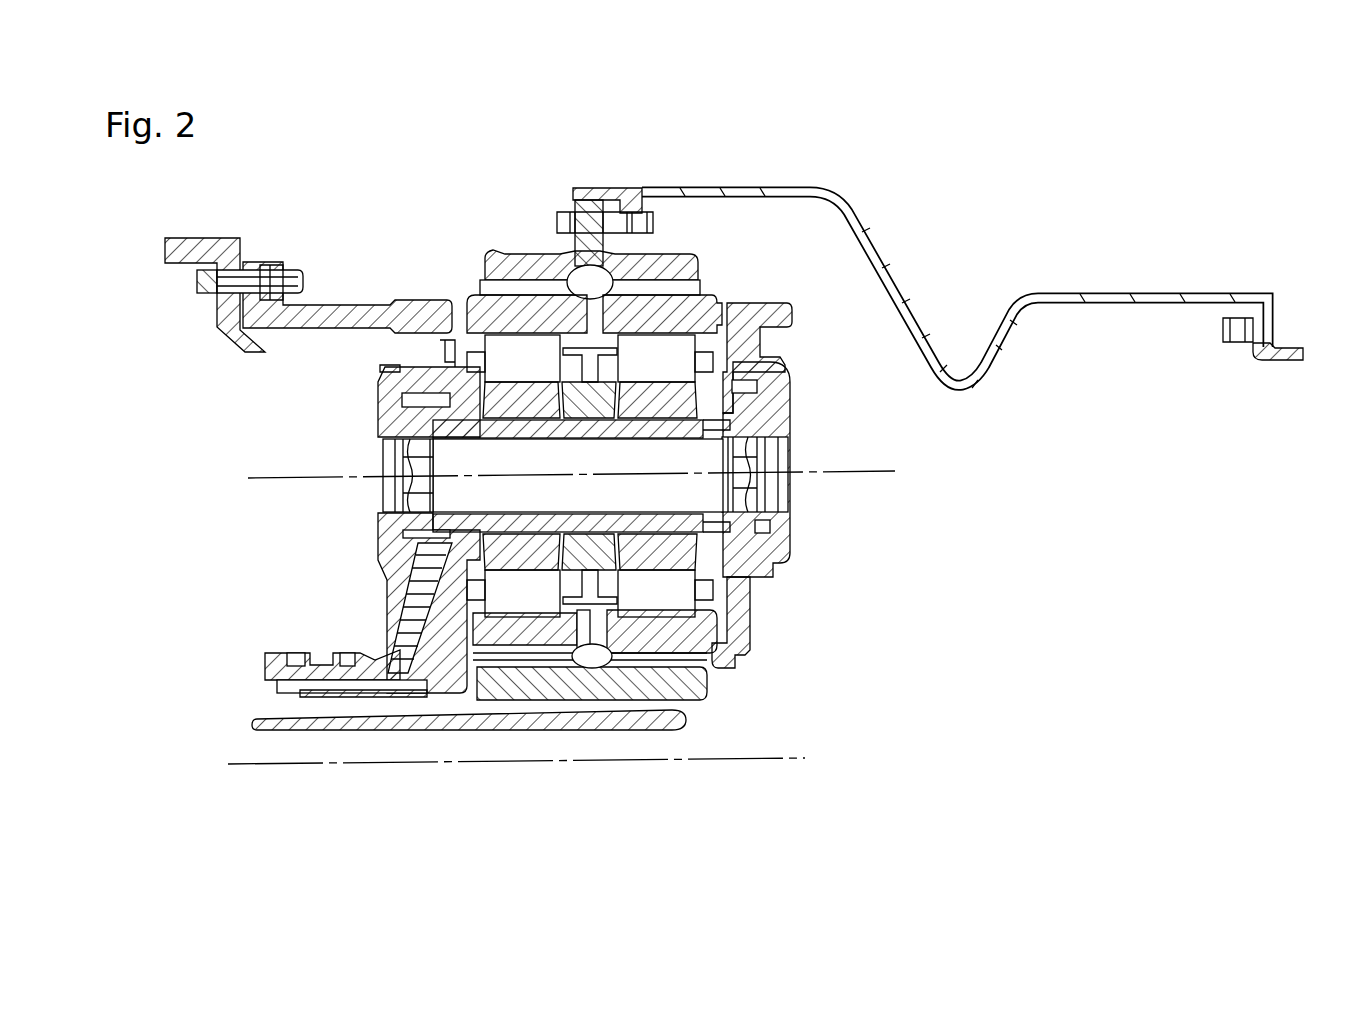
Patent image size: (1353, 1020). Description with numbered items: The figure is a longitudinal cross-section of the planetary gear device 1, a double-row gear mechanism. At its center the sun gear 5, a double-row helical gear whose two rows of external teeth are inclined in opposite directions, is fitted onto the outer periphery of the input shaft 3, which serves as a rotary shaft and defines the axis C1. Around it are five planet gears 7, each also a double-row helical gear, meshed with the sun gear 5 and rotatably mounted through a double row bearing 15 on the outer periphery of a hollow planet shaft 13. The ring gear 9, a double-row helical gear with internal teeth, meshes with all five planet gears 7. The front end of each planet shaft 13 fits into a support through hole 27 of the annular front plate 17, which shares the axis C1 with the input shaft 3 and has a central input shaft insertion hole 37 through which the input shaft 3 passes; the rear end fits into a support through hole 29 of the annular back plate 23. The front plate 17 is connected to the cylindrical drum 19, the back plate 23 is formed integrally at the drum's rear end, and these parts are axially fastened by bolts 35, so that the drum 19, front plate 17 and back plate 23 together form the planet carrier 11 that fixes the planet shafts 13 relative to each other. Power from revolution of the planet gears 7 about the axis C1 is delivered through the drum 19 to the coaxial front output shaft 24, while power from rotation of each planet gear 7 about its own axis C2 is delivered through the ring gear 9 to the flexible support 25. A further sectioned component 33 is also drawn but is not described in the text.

The planetary gear device 1 is at (907, 120).
The input shaft 3 is at (316, 737).
The sun gear 5 is at (706, 684).
The planet gears 7 is at (466, 303).
The ring gear 9 is at (483, 276).
The planet carrier 11 is at (524, 312).
The planet shafts 13 is at (713, 570).
The double row bearing 15 is at (664, 350).
The front plate 17 is at (396, 354).
The drum 19 is at (350, 301).
The back plate 23 is at (740, 301).
The front output shaft 24 is at (192, 267).
The flexible support 25 is at (866, 227).
The support through holes 27 is at (382, 410).
The support through holes 29 is at (740, 540).
The lower housing portion 33 is at (380, 522).
The bolts 35 is at (380, 463).
The input shaft insertion hole 37 is at (303, 703).
The axis C1 is at (710, 760).
The axis C2 is at (848, 473).